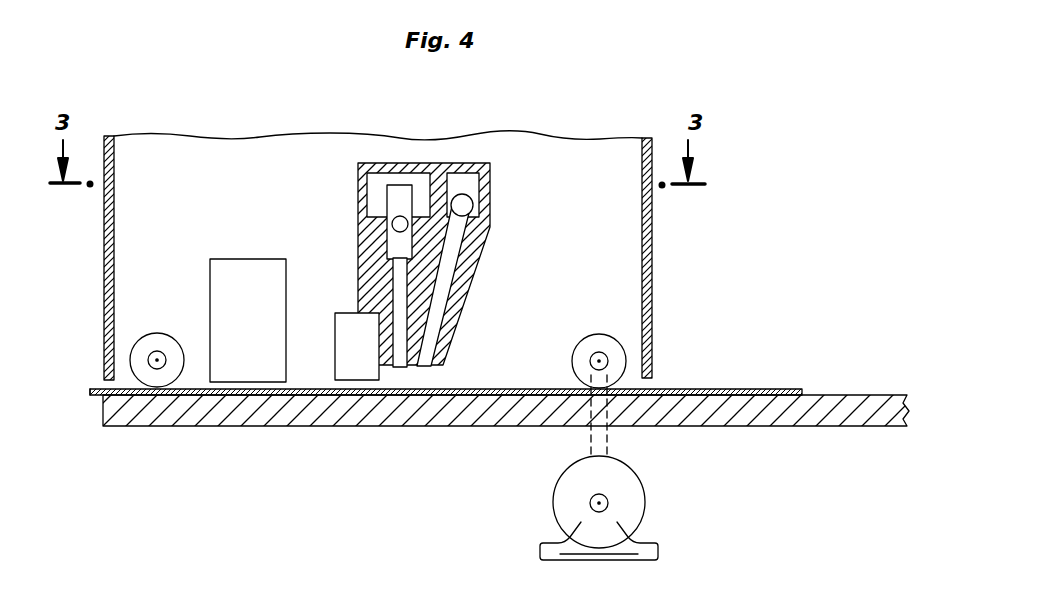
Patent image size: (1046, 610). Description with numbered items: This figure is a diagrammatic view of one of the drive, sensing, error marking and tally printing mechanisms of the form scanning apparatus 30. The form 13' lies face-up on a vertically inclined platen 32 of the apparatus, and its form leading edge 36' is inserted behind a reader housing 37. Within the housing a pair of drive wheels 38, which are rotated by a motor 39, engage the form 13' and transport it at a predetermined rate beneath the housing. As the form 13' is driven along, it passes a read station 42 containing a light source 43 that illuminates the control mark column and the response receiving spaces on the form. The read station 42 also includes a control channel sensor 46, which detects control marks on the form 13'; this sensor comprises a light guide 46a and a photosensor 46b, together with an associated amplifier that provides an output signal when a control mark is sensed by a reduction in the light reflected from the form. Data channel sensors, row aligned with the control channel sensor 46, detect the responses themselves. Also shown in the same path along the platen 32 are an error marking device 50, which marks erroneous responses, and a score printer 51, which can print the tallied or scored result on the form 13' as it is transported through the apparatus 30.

The form scanning apparatus 30 is at (614, 115).
The platen 32 is at (468, 411).
The form leading edge 36' is at (66, 356).
The reader housing 37 is at (652, 262).
The drive wheels 38 is at (178, 373).
The motor 39 is at (642, 495).
The read station 42 is at (487, 157).
The light source 43 is at (466, 203).
The control channel sensor 46 is at (378, 238).
The light guide 46a is at (395, 285).
The photosensor 46b is at (398, 215).
The error marking device 50 is at (345, 313).
The score printer 51 is at (225, 267).
The form 13' is at (446, 366).